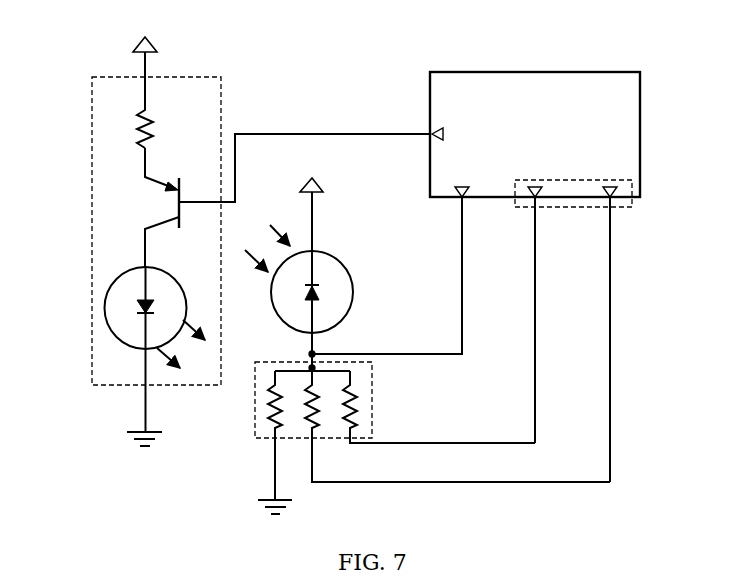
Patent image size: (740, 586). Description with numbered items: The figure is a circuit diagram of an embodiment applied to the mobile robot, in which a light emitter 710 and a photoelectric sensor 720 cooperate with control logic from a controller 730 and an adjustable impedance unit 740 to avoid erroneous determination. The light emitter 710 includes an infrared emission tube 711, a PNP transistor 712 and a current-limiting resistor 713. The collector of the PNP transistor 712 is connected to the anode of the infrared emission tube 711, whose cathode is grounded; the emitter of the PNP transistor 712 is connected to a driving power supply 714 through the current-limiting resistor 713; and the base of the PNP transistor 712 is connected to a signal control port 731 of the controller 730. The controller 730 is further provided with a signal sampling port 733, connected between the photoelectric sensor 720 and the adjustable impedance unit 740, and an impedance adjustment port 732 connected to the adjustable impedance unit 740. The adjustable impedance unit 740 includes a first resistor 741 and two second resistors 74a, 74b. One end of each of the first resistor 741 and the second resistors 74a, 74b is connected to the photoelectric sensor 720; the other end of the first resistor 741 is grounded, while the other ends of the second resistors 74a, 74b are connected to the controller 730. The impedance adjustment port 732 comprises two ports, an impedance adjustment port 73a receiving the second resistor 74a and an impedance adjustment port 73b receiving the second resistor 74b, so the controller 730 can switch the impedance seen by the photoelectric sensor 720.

The light emitter 710 is at (92, 372).
The infrared emission tube 711 is at (105, 288).
The PNP transistor 712 is at (177, 202).
The current-limiting resistor 713 is at (140, 132).
The driving power supply 714 is at (156, 43).
The photoelectric sensor 720 is at (345, 260).
The controller 730 is at (535, 72).
The signal control port 731 is at (435, 128).
The impedance adjustment port 732 is at (627, 178).
The signal sampling port 733 is at (456, 190).
The impedance adjustment port 73a is at (615, 198).
The impedance adjustment port 73b is at (540, 190).
The adjustable impedance unit 740 is at (262, 362).
The first resistor 741 is at (267, 407).
The second resistor 74a is at (317, 418).
The second resistor 74b is at (357, 402).